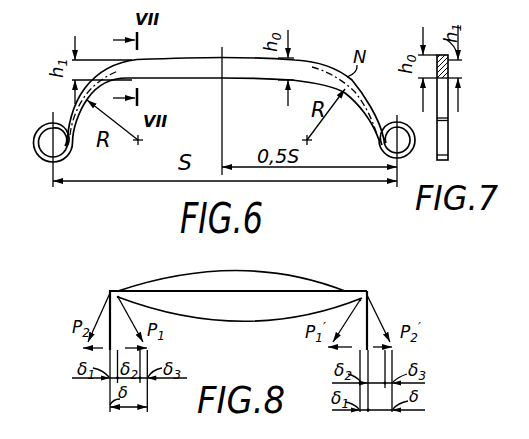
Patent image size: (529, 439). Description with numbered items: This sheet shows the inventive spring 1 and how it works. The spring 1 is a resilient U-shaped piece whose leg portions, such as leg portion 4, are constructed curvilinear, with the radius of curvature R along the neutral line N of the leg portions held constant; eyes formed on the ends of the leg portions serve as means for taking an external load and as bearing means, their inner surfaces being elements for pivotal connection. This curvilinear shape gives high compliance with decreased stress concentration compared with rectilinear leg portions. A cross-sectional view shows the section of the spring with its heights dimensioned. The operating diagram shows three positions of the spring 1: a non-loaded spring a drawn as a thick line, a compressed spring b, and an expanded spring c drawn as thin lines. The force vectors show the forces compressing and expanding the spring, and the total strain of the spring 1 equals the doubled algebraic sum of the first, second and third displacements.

The spring 1 is at (344, 289).
The leg portion 4 is at (369, 295).
The non-loaded spring position a is at (125, 289).
The compressed spring position b is at (177, 283).
The expanded spring position c is at (199, 319).